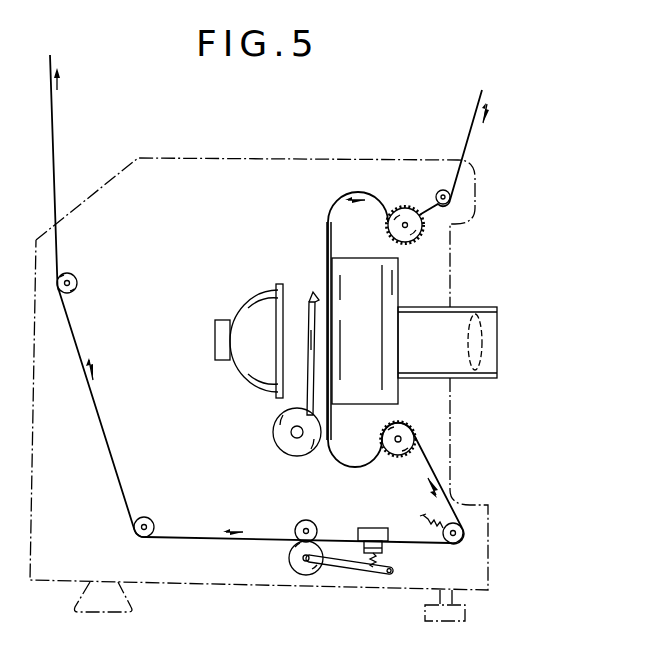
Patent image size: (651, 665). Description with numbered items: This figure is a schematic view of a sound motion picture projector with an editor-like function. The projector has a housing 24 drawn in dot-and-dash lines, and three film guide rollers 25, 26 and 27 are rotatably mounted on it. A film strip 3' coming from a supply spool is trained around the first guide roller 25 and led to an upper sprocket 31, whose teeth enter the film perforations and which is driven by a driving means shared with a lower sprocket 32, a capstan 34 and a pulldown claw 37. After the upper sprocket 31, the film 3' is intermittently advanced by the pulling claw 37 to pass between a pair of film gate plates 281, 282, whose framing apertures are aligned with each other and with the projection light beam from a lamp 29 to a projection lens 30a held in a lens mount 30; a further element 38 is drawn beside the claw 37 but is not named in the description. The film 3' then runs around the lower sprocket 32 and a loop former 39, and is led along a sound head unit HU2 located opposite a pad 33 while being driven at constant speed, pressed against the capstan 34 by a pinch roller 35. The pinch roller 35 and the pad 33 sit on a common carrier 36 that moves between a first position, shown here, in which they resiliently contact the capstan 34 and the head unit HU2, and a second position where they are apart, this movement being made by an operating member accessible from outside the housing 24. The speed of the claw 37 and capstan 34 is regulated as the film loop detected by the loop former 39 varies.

The housing 24 is at (237, 176).
The film guide roller 25 is at (443, 189).
The film guide roller 26 is at (152, 520).
The film guide roller 27 is at (77, 282).
The film gate plate 281 is at (326, 226).
The film gate plate 282 is at (332, 224).
The lamp 29 is at (256, 311).
The lens mount 30 is at (455, 320).
The projection lens 30a is at (482, 343).
The upper sprocket 31 is at (404, 206).
The lower sprocket 32 is at (414, 439).
The pad 33 is at (388, 548).
The capstan 34 is at (306, 520).
The pinch roller 35 is at (306, 575).
The common carrier 36 is at (350, 575).
The pulldown claw 37 is at (312, 298).
The roller 38 is at (273, 432).
The loop former 39 is at (463, 534).
The film strip 3' is at (277, 299).
The sound head unit HU2 is at (375, 527).